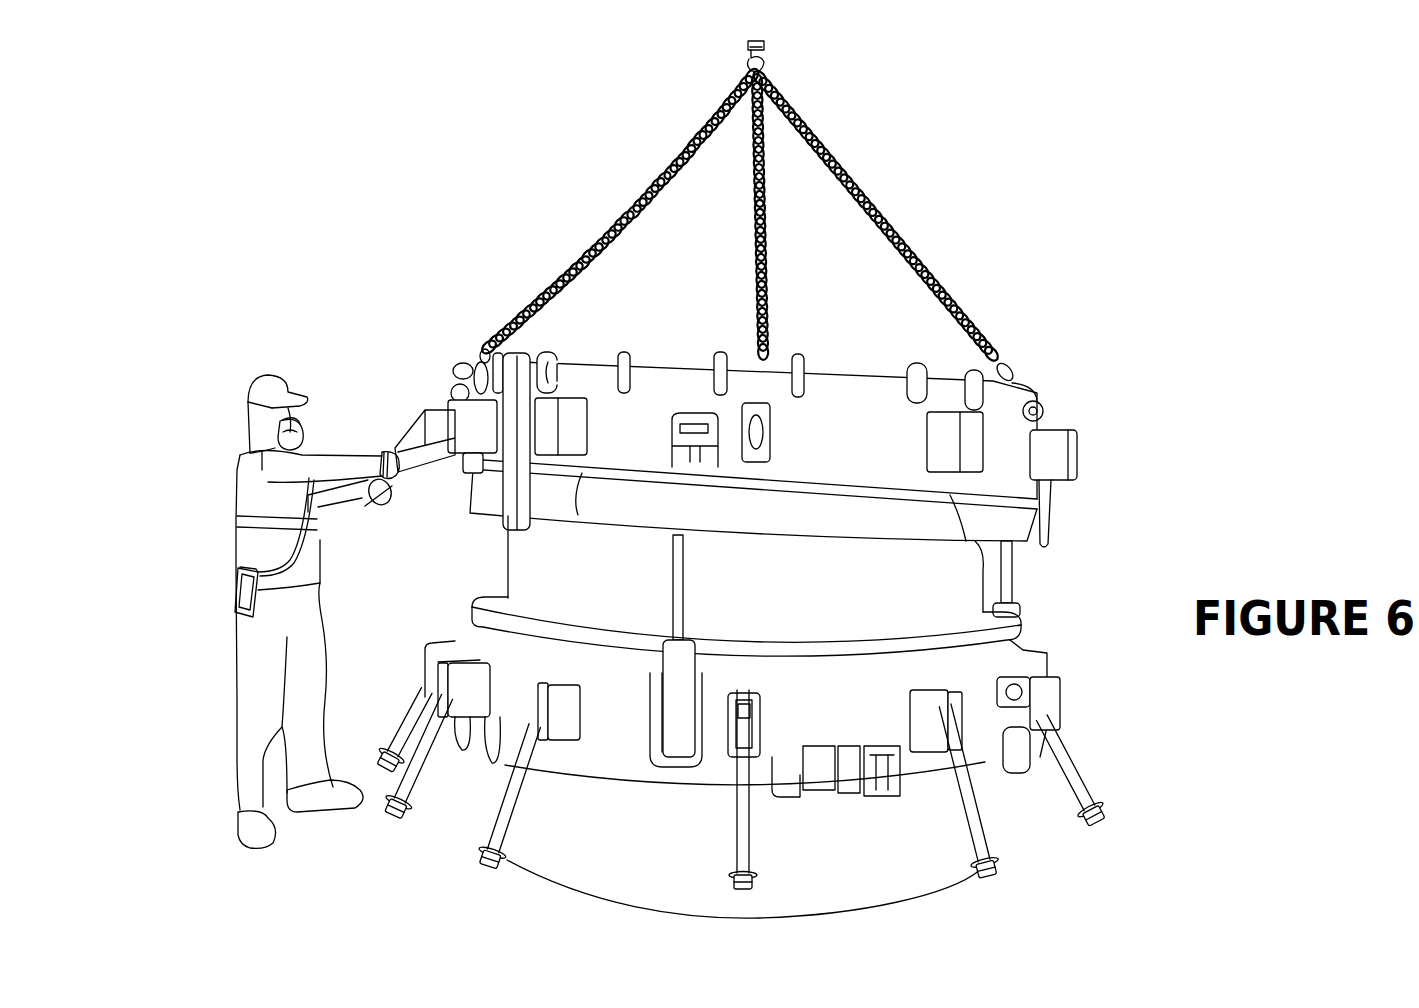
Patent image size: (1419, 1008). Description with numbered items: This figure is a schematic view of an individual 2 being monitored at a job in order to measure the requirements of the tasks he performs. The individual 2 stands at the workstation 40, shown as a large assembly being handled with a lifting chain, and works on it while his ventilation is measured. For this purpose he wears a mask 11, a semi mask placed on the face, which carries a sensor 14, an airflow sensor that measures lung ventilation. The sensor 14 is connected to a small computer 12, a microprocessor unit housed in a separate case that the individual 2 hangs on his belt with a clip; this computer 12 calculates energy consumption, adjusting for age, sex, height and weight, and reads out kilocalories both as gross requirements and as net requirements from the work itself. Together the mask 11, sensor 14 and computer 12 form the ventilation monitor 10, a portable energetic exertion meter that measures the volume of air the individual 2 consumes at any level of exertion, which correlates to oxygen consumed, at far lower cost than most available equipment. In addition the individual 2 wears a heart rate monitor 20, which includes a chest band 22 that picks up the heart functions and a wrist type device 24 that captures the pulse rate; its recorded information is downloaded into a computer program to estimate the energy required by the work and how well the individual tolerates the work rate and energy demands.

The individual 2 is at (270, 368).
The ventilation monitor 10 is at (233, 582).
The mask 11 is at (298, 421).
The small computer 12 is at (232, 595).
The sensor 14 is at (303, 435).
The heart rate monitor 20 is at (233, 518).
The chest band 22 is at (237, 510).
The wrist type device 24 is at (388, 452).
The workstation 40 is at (1085, 428).